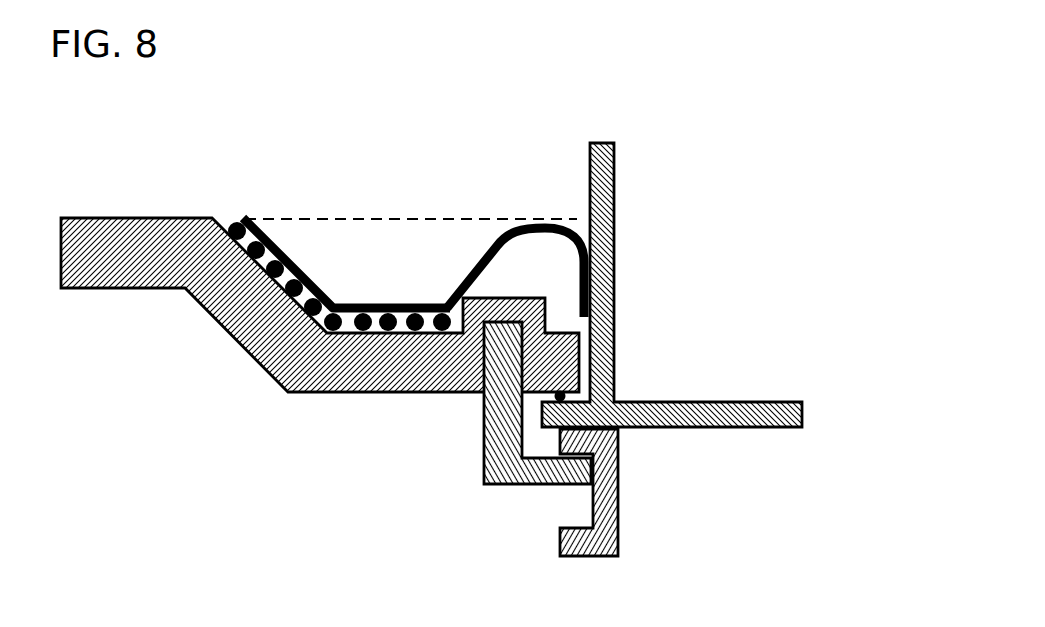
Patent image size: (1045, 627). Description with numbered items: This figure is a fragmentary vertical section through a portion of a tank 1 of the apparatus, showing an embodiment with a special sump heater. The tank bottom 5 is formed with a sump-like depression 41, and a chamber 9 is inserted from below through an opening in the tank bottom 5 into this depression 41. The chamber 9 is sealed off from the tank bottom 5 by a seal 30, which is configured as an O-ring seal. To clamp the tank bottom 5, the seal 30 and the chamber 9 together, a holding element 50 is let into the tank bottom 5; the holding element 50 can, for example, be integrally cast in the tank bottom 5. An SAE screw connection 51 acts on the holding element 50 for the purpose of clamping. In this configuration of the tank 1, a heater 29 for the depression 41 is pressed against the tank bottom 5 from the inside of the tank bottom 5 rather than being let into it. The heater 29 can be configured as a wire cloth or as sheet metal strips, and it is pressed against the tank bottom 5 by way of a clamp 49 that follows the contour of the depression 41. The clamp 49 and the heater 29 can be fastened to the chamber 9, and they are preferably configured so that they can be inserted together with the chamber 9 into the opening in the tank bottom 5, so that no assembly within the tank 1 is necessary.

The tank 1 is at (121, 326).
The tank bottom 5 is at (108, 217).
The chamber 9 is at (589, 180).
The heater 29 is at (296, 272).
The seal 30 is at (563, 390).
The sump-like depression 41 is at (423, 262).
The clamp 49 is at (490, 244).
The holding element 50 is at (484, 470).
The SAE screw connection 51 is at (618, 495).